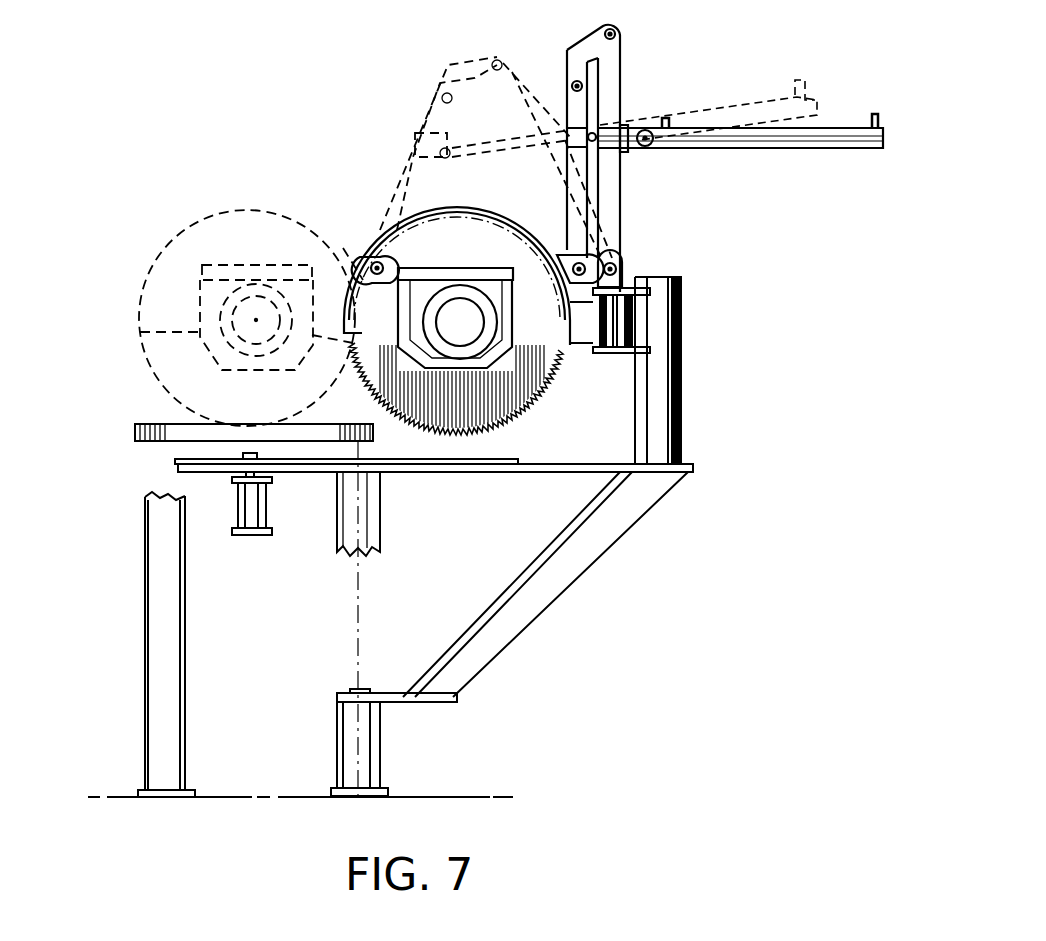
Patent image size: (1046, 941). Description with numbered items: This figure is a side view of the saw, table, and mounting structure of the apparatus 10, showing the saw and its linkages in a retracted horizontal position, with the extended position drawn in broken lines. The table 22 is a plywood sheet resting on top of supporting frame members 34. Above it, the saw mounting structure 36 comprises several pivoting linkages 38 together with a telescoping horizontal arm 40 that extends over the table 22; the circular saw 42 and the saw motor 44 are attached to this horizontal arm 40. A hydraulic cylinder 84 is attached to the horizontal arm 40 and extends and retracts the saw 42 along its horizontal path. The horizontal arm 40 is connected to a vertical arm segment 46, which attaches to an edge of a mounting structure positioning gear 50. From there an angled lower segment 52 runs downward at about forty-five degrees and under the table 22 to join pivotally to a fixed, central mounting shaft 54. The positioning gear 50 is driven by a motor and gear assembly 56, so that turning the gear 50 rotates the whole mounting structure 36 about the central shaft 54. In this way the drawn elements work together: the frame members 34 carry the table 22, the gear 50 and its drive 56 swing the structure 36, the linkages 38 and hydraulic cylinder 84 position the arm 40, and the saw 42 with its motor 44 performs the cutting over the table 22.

The apparatus 10 is at (380, 137).
The table 22 is at (173, 425).
The supporting frame members 34 is at (158, 630).
The saw mounting structure 36 is at (672, 97).
The pivoting linkages 38 is at (575, 100).
The telescoping horizontal arm 40 is at (562, 258).
The circular saw 42 is at (542, 380).
The saw motor 44 is at (476, 333).
The vertical arm segment 46 is at (682, 418).
The mounting structure positioning gear 50 is at (202, 464).
The angled lower segment 52 is at (560, 587).
The central mounting shaft 54 is at (367, 745).
The motor and gear assembly 56 is at (270, 505).
The hydraulic cylinder 84 is at (793, 148).